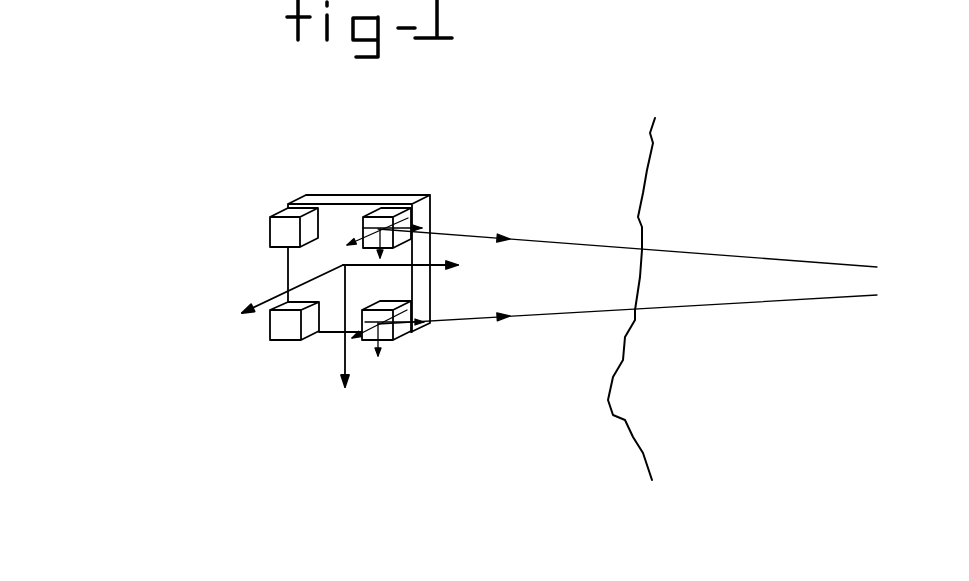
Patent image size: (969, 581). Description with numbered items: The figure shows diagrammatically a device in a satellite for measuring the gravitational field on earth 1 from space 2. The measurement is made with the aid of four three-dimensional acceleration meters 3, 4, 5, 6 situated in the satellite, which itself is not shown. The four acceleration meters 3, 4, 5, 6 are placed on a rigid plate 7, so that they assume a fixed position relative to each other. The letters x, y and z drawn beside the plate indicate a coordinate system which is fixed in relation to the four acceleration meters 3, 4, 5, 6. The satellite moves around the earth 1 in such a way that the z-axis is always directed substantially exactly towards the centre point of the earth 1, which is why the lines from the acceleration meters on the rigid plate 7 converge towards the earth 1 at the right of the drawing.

The earth 1 is at (745, 392).
The space 2 is at (68, 282).
The three-dimensional acceleration meter 3 is at (281, 331).
The three-dimensional acceleration meter 4 is at (400, 330).
The three-dimensional acceleration meter 5 is at (392, 197).
The three-dimensional acceleration meter 6 is at (278, 227).
The rigid plate 7 is at (360, 192).